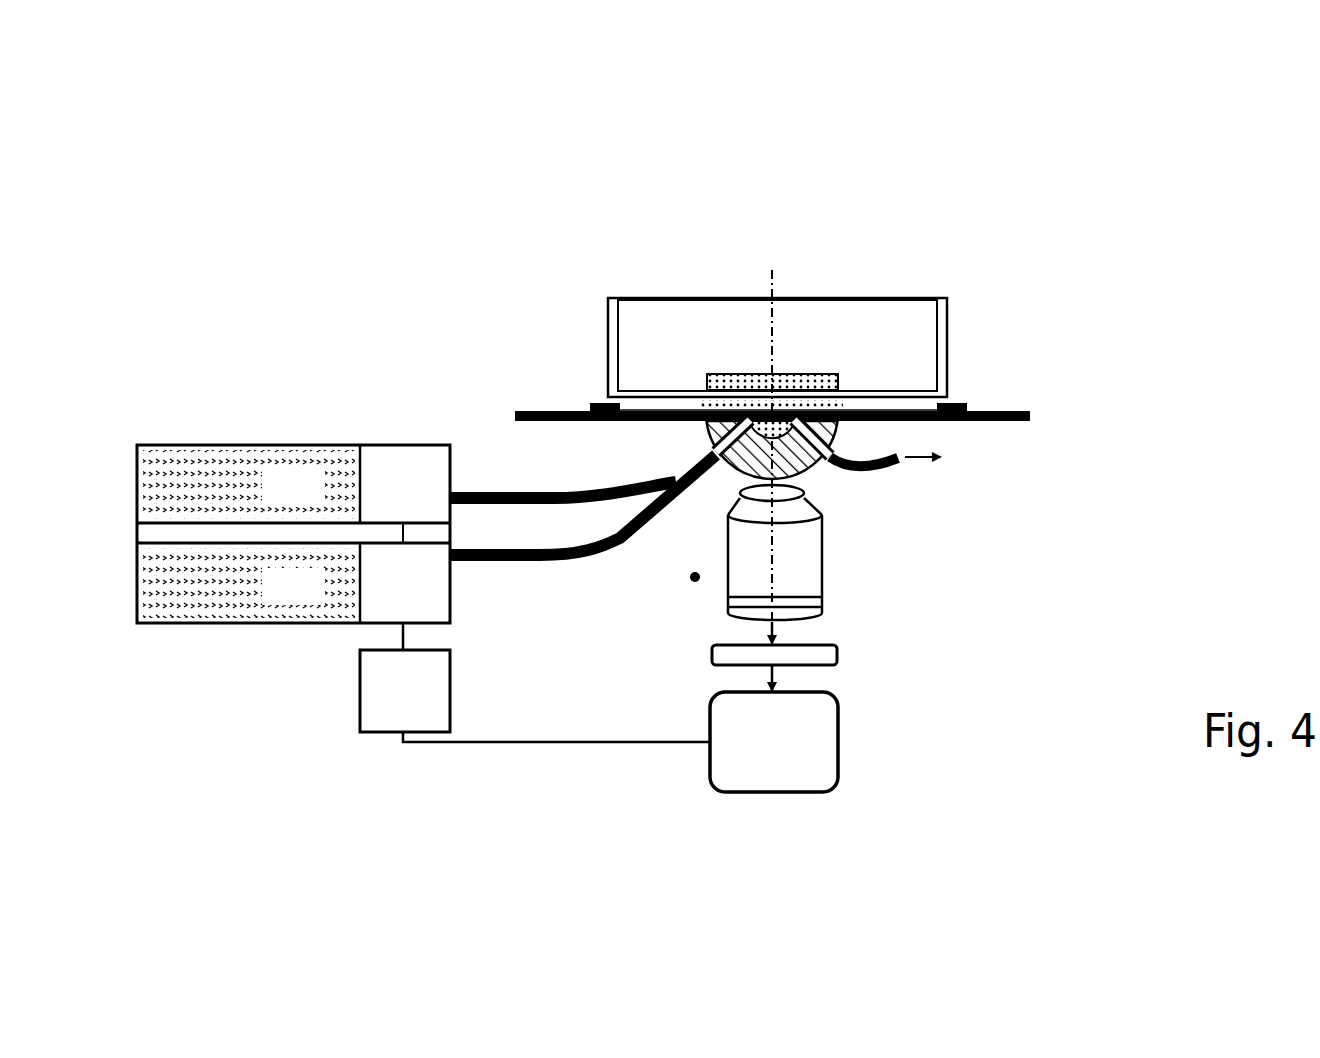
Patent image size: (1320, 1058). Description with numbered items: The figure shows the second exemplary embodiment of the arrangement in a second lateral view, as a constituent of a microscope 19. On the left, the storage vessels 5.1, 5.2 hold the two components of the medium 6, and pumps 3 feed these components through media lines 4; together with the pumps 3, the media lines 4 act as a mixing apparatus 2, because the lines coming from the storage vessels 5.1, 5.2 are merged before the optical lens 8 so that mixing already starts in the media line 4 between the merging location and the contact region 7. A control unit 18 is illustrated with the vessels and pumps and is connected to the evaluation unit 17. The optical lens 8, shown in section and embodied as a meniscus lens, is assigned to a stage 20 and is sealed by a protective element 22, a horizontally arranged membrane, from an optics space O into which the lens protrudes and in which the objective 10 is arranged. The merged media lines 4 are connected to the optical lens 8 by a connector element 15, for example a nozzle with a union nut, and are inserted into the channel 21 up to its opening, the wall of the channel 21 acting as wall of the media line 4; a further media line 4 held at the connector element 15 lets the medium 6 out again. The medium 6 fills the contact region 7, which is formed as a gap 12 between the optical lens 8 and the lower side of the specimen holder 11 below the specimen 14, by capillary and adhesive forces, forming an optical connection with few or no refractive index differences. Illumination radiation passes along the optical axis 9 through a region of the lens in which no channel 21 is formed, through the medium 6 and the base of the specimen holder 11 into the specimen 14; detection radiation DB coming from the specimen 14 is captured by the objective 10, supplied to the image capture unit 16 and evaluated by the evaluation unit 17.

The mixing apparatus 2 is at (457, 596).
The pumps 3 is at (397, 501).
The media lines 4 is at (528, 505).
The storage vessel 5.1 is at (137, 482).
The storage vessel 5.2 is at (137, 582).
The medium 6 is at (210, 625).
The contact region 7 is at (790, 412).
The optical lens 8 is at (738, 470).
The optical axis 9 is at (772, 278).
The objective 10 is at (802, 583).
The specimen holder 11 is at (875, 404).
The gap 12 is at (905, 403).
The specimen 14 is at (735, 374).
The connector element 15 is at (825, 460).
The image capture unit 16 is at (845, 655).
The evaluation unit 17 is at (758, 755).
The control unit 18 is at (391, 703).
The microscope 19 is at (610, 198).
The stage 20 is at (595, 403).
The channel 21 is at (707, 438).
The protective element 22 is at (535, 411).
The detection radiation DB is at (805, 468).
The optics space O is at (690, 578).